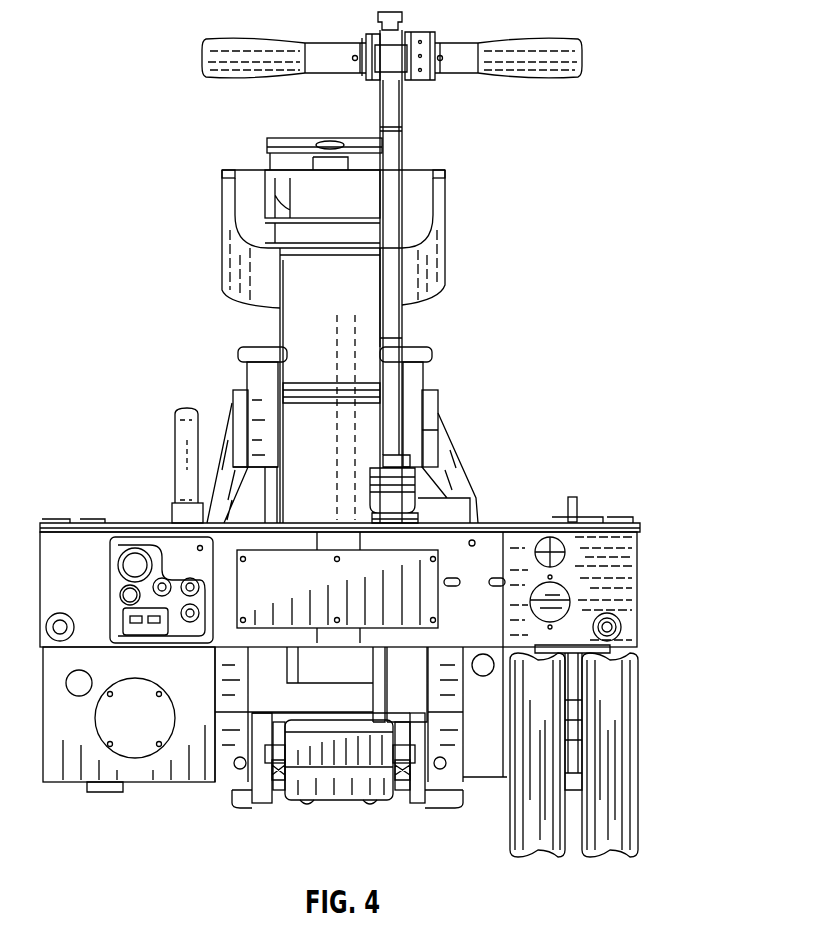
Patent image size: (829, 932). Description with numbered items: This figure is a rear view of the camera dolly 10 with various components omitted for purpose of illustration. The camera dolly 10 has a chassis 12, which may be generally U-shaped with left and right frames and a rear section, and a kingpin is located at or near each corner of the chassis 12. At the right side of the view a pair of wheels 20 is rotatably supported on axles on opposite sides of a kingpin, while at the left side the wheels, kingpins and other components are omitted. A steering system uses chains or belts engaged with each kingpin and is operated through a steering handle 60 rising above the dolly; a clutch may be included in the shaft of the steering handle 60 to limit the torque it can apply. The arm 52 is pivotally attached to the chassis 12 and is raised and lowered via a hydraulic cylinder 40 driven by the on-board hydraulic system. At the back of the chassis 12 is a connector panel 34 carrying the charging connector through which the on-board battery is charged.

The camera dolly 10 is at (562, 188).
The chassis 12 is at (613, 562).
The wheels 20 is at (613, 818).
The connector panel 34 is at (133, 520).
The hydraulic cylinder 40 is at (358, 360).
The arm 52 is at (313, 300).
The steering handle 60 is at (403, 153).